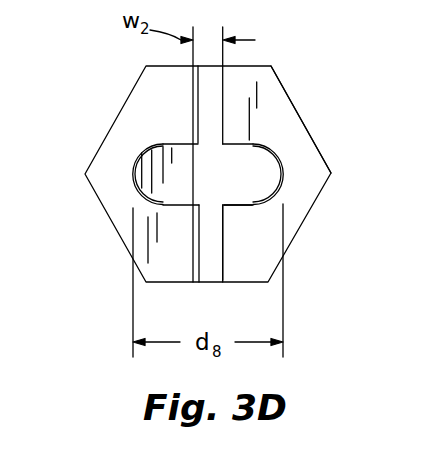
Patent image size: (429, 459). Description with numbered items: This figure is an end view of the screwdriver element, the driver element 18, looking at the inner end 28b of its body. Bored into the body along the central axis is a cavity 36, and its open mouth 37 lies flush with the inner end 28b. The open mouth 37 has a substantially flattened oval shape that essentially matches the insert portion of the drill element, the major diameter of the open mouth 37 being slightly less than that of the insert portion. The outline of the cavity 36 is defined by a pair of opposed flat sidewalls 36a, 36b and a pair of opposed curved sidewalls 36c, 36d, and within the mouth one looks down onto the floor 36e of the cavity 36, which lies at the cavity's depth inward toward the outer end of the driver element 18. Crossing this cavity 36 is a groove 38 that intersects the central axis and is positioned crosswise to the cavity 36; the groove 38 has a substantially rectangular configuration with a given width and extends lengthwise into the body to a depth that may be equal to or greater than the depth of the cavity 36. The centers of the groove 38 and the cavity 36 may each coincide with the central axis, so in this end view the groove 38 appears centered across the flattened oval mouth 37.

The driver element 18 is at (267, 80).
The inner end 28b is at (295, 136).
The cavity 36 is at (273, 164).
The flat sidewall 36a is at (233, 146).
The flat sidewall 36b is at (248, 205).
The curved sidewall 36c is at (135, 160).
The curved sidewall 36d is at (283, 182).
The floor 36e is at (240, 188).
The open mouth 37 is at (165, 200).
The groove 38 is at (208, 99).